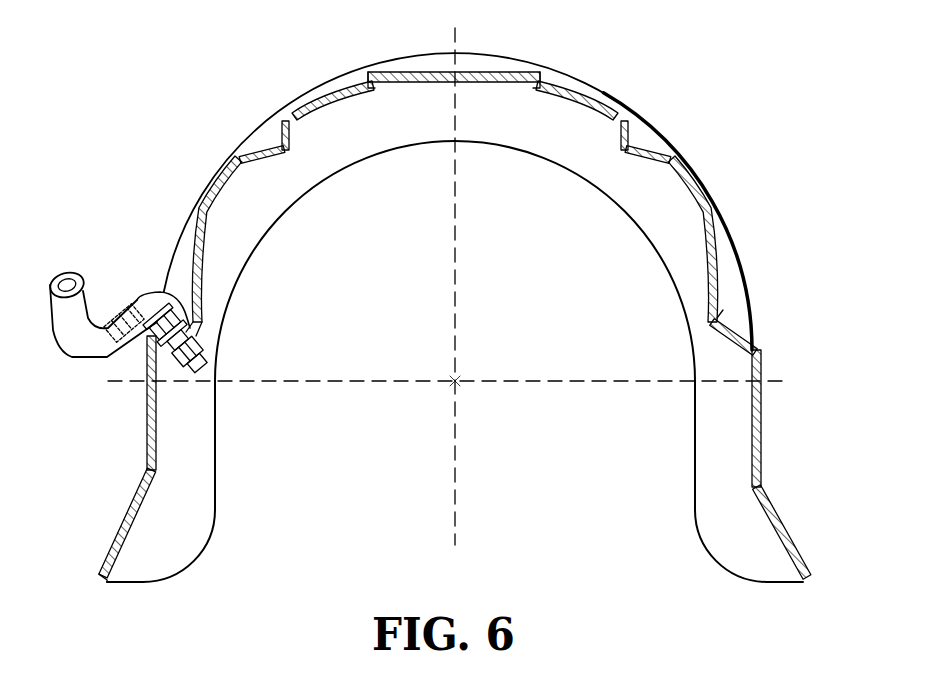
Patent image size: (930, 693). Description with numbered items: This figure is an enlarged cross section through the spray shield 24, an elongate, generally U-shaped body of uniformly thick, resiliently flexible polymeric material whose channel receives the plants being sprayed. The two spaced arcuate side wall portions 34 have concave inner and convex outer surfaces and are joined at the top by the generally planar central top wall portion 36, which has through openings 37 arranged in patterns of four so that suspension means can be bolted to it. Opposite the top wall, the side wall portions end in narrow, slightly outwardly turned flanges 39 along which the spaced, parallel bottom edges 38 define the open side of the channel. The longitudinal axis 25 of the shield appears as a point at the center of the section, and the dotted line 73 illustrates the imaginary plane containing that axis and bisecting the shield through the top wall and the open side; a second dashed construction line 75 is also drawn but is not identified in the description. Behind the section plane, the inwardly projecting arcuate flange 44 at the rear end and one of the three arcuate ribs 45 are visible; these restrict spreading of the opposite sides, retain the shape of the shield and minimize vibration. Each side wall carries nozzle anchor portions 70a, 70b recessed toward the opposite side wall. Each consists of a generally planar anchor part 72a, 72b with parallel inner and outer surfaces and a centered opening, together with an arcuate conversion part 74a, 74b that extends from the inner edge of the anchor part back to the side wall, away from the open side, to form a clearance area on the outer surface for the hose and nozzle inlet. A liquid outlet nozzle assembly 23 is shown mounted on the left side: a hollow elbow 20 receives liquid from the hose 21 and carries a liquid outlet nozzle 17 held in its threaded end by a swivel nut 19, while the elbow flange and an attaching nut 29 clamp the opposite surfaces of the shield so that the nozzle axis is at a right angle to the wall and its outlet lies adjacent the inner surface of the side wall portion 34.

The liquid outlet nozzle 17 is at (218, 382).
The swivel nut 19 is at (186, 388).
The hollow elbow 20 is at (148, 296).
The hose 21 is at (72, 332).
The liquid outlet nozzle assembly 23 is at (154, 322).
The spray shield 24 is at (449, 317).
The longitudinal axis 25 is at (457, 383).
The attaching nut 29 is at (150, 378).
The arcuate side wall portion 34 is at (226, 192).
The central top wall portion 36 is at (471, 72).
The through opening 37 is at (412, 72).
The bottom edge 38 is at (100, 580).
The flange 39 is at (127, 518).
The arcuate flange 44 is at (399, 141).
The arcuate rib 45 is at (336, 84).
The nozzle anchor portion 70a is at (455, 199).
The nozzle anchor portion 70b is at (449, 363).
The anchor part 72a is at (247, 168).
The anchor part 72b is at (210, 332).
The imaginary bisecting plane 73 is at (460, 292).
The arcuate conversion part 74a is at (292, 134).
The arcuate conversion part 74b is at (203, 268).
The horizontal centerline 75 is at (397, 388).